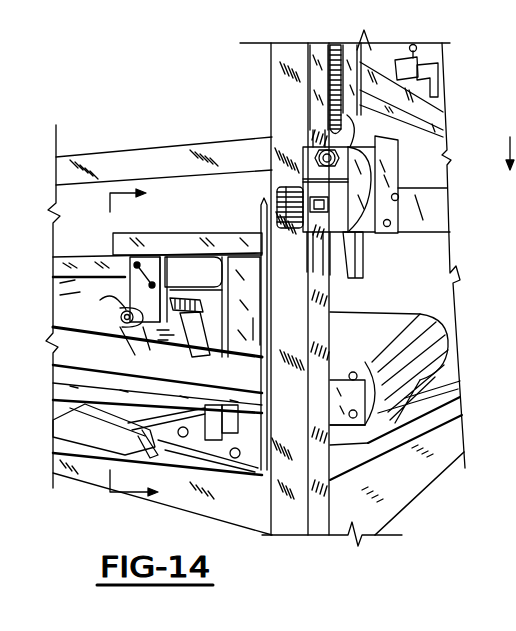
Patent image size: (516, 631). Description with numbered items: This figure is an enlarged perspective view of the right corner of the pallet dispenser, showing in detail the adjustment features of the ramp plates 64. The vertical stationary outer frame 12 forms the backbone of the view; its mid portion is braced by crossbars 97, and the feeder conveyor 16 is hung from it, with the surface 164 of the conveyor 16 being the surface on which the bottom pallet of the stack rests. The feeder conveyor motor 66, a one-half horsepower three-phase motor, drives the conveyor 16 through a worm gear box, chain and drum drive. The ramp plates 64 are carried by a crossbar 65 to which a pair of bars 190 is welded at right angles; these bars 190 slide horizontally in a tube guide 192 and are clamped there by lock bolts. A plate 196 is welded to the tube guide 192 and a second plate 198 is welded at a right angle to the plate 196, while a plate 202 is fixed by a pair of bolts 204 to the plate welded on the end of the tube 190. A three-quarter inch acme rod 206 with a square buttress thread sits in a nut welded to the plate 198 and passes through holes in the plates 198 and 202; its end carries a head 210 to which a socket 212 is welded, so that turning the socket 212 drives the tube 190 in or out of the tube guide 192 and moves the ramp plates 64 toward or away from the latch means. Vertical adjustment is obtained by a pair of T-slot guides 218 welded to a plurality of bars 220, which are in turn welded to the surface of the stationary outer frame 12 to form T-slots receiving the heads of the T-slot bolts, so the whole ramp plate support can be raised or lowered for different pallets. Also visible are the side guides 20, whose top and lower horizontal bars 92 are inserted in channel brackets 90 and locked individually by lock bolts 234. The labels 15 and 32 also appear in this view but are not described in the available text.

The stationary outer frame 12 is at (292, 100).
The rack 32 is at (332, 80).
The lock bolts 234 is at (414, 44).
The horizontal bars 92 is at (414, 67).
The channel brackets 90 is at (418, 74).
The crossbars 97 is at (173, 176).
The section line 15 is at (146, 343).
The T-slot guides 218 is at (252, 213).
The crossbar 65 is at (75, 256).
The ramp plates 64 is at (163, 240).
The tube guide 192 is at (238, 242).
The bars 190 is at (193, 273).
The bolts 204 is at (115, 278).
The plate 202 is at (125, 308).
The socket 212 is at (115, 338).
The head 210 is at (143, 342).
The acme rod 206 is at (197, 348).
The plate 198 is at (246, 356).
The bars 220 is at (273, 258).
The plate 196 is at (251, 326).
The surface 164 is at (380, 347).
The side guides 20 is at (358, 253).
The feeder conveyor 16 is at (380, 310).
The feeder conveyor motor 66 is at (155, 438).